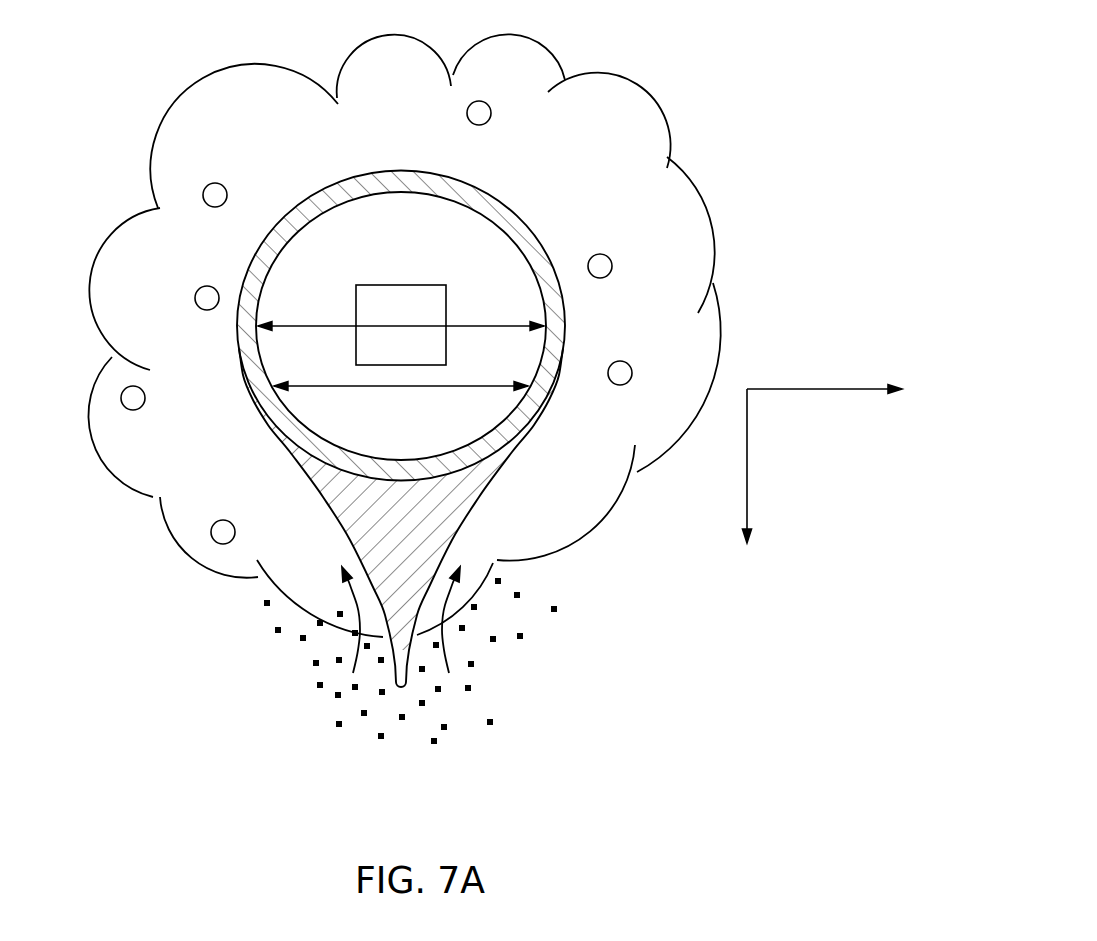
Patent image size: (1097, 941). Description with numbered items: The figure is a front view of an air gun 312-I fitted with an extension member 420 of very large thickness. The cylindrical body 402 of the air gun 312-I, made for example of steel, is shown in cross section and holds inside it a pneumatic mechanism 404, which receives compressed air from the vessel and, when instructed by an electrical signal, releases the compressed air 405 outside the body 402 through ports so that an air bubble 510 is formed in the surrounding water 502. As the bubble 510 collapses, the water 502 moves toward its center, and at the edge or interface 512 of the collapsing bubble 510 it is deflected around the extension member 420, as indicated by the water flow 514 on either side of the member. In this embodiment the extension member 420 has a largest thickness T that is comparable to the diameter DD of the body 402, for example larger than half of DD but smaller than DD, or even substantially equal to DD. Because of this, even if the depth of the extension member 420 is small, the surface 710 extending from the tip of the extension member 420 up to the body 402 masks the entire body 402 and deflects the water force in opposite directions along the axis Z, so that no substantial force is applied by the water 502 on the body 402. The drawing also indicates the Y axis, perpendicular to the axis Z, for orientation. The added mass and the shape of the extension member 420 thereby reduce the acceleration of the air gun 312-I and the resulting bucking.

The air gun 312-I is at (643, 48).
The body 402 is at (515, 213).
The pneumatic mechanism 404 is at (401, 283).
The compressed air 405 is at (120, 397).
The extension member 420 is at (437, 535).
The water 502 is at (433, 745).
The collapsing bubble 510 is at (720, 297).
The edge/interface 512 is at (168, 533).
The water flow 514 is at (345, 647).
The surface 710 is at (472, 508).
The diameter DD is at (323, 323).
The largest thickness T is at (402, 390).
The axis Z is at (824, 387).
The Y axis Y is at (750, 467).